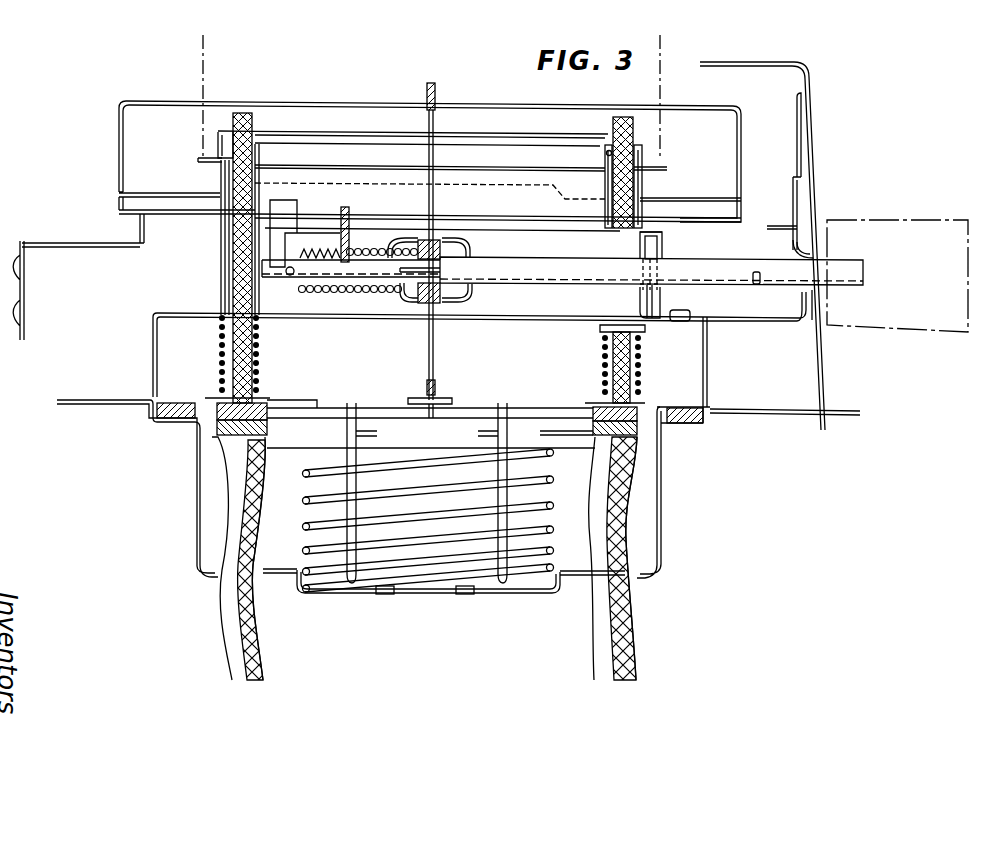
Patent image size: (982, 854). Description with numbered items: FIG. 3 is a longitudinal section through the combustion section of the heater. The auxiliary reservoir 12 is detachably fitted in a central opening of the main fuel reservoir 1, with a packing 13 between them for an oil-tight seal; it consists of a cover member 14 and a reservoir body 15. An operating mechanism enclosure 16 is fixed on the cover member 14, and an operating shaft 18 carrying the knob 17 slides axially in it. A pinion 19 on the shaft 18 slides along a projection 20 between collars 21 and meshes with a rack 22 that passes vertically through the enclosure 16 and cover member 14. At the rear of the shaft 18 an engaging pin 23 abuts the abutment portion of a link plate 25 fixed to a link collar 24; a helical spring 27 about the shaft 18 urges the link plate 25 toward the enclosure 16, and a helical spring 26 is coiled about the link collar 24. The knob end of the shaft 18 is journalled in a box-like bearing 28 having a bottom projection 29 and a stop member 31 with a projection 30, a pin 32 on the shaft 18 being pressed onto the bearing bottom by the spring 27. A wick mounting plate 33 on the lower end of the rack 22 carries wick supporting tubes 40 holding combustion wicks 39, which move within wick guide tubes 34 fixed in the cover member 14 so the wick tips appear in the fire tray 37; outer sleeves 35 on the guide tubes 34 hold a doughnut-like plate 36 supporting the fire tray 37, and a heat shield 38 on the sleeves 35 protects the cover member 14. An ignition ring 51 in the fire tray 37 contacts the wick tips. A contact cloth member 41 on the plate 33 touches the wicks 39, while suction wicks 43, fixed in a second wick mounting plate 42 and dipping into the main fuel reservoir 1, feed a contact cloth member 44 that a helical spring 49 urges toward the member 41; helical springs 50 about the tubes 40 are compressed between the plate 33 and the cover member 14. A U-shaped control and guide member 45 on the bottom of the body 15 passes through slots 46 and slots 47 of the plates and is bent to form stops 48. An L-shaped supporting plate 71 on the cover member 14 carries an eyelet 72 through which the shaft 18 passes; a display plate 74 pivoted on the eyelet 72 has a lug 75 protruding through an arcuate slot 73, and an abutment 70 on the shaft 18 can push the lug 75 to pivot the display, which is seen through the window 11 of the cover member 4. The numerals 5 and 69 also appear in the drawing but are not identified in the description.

The main fuel reservoir 1 is at (83, 407).
The cover member 4 is at (812, 80).
The section line 5 is at (201, 62).
The window 11 is at (815, 137).
The auxiliary reservoir 12 is at (707, 385).
The packing 13 is at (176, 420).
The cover member 14 is at (173, 312).
The reservoir body 15 is at (662, 488).
The operating mechanism enclosure 16 is at (468, 245).
The knob 17 is at (884, 330).
The operating shaft 18 is at (543, 266).
The pinion 19 is at (438, 308).
The projection 20 is at (418, 302).
The collars 21 is at (398, 246).
The rack 22 is at (437, 94).
The engaging pin 23 is at (262, 270).
The link collar 24 is at (367, 292).
The link plate 25 is at (346, 208).
The helical spring 26 is at (348, 296).
The helical spring 27 is at (303, 292).
The bearing 28 is at (651, 230).
The projection 29 is at (648, 318).
The projection 30 is at (673, 264).
The stop member 31 is at (666, 258).
The pin 32 is at (640, 250).
The wick mounting plate 33 is at (450, 398).
The wick guide tube 34 is at (222, 259).
The outer sleeve 35 is at (222, 240).
The plate 36 is at (198, 161).
The fire tray 37 is at (218, 144).
The heat shield 38 is at (745, 122).
The combustion wicks 39 is at (241, 112).
The wick supporting tubes 40 is at (222, 305).
The contact cloth member 41 is at (638, 417).
The wick mounting plate 42 is at (420, 452).
The suction wicks 43 is at (632, 597).
The contact cloth member 44 is at (638, 431).
The control and guide member 45 is at (510, 580).
The slots 46 is at (515, 452).
The slots 47 is at (359, 402).
The stops 48 is at (370, 447).
The helical spring 49 is at (556, 558).
The helical spring 50 is at (220, 352).
The ignition ring 51 is at (614, 142).
The plate 69 is at (24, 303).
The abutment 70 is at (754, 284).
The L-shaped supporting plate 71 is at (797, 324).
The eyelet 72 is at (813, 246).
The arcuate slot 73 is at (794, 223).
The display plate 74 is at (797, 149).
The lug 75 is at (777, 230).